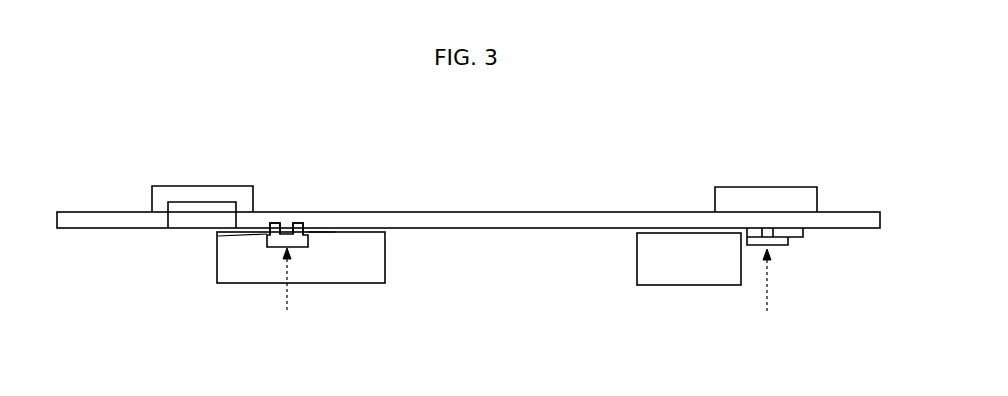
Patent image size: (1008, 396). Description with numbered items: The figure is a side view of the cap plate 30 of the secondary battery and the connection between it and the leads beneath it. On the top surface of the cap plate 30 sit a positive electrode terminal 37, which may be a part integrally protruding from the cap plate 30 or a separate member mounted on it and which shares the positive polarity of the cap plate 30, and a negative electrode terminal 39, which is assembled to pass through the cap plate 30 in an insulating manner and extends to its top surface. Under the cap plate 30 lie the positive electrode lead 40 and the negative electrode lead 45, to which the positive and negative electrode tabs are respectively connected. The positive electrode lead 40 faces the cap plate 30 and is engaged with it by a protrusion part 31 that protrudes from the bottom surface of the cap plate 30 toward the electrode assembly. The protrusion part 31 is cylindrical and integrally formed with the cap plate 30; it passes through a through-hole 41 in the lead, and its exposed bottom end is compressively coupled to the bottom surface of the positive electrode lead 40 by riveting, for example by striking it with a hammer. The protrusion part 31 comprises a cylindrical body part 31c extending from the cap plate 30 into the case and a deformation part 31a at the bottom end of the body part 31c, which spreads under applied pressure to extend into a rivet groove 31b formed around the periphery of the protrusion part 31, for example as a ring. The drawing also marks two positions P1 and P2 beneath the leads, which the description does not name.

The cap plate 30 is at (565, 212).
The protrusion part 31 is at (300, 182).
The deformation part 31a is at (277, 224).
The rivet groove 31b is at (305, 224).
The body part 31c is at (218, 236).
The positive electrode terminal 37 is at (203, 195).
The negative electrode terminal 39 is at (762, 195).
The positive electrode lead 40 is at (363, 272).
The through-hole 41 is at (333, 232).
The negative electrode lead 45 is at (688, 272).
The first pressing position P1 is at (286, 296).
The second pressing position P2 is at (766, 297).